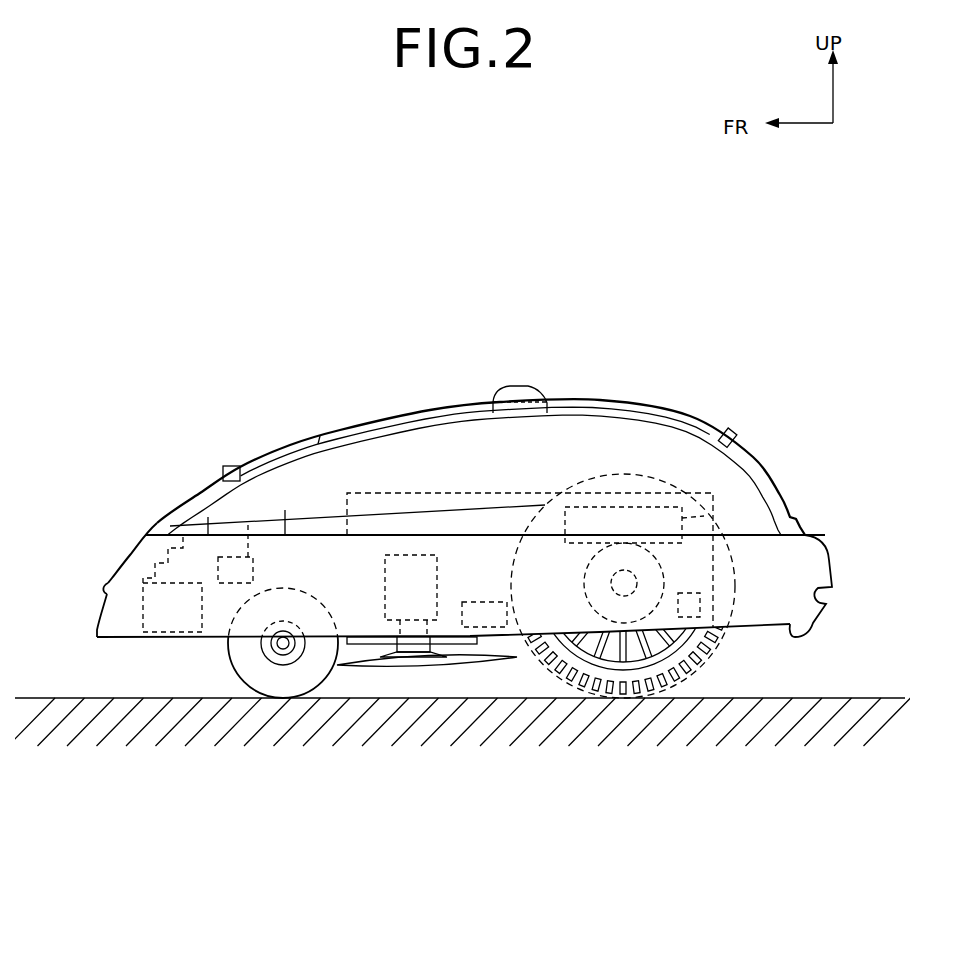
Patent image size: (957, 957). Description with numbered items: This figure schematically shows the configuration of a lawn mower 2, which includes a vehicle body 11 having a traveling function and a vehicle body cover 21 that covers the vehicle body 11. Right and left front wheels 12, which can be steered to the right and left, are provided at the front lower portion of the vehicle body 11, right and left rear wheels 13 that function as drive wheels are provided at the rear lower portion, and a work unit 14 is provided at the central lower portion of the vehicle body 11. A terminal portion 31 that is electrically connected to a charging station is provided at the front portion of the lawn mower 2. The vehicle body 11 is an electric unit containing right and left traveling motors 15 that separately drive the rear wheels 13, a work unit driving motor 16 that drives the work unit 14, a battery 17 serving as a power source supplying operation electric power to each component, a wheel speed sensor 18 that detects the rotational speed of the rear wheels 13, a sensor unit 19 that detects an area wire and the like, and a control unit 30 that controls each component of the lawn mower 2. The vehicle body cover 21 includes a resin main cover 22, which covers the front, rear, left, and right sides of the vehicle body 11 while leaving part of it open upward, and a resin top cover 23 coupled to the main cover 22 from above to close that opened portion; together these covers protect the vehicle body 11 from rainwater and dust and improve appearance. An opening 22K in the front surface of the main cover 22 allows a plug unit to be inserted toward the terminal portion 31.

The lawn mower 2 is at (165, 395).
The vehicle body 11 is at (397, 493).
The front wheels 12 is at (307, 677).
The rear wheels 13 is at (656, 690).
The work unit 14 is at (476, 674).
The traveling motors 15 is at (660, 573).
The work unit driving motor 16 is at (385, 583).
The battery 17 is at (473, 600).
The wheel speed sensor 18 is at (700, 605).
The sensor unit 19 is at (257, 570).
The vehicle body cover 21 is at (155, 520).
The main cover 22 is at (120, 550).
The opening 22K is at (103, 590).
The top cover 23 is at (143, 532).
The control unit 30 is at (707, 513).
The terminal portion 31 is at (178, 640).